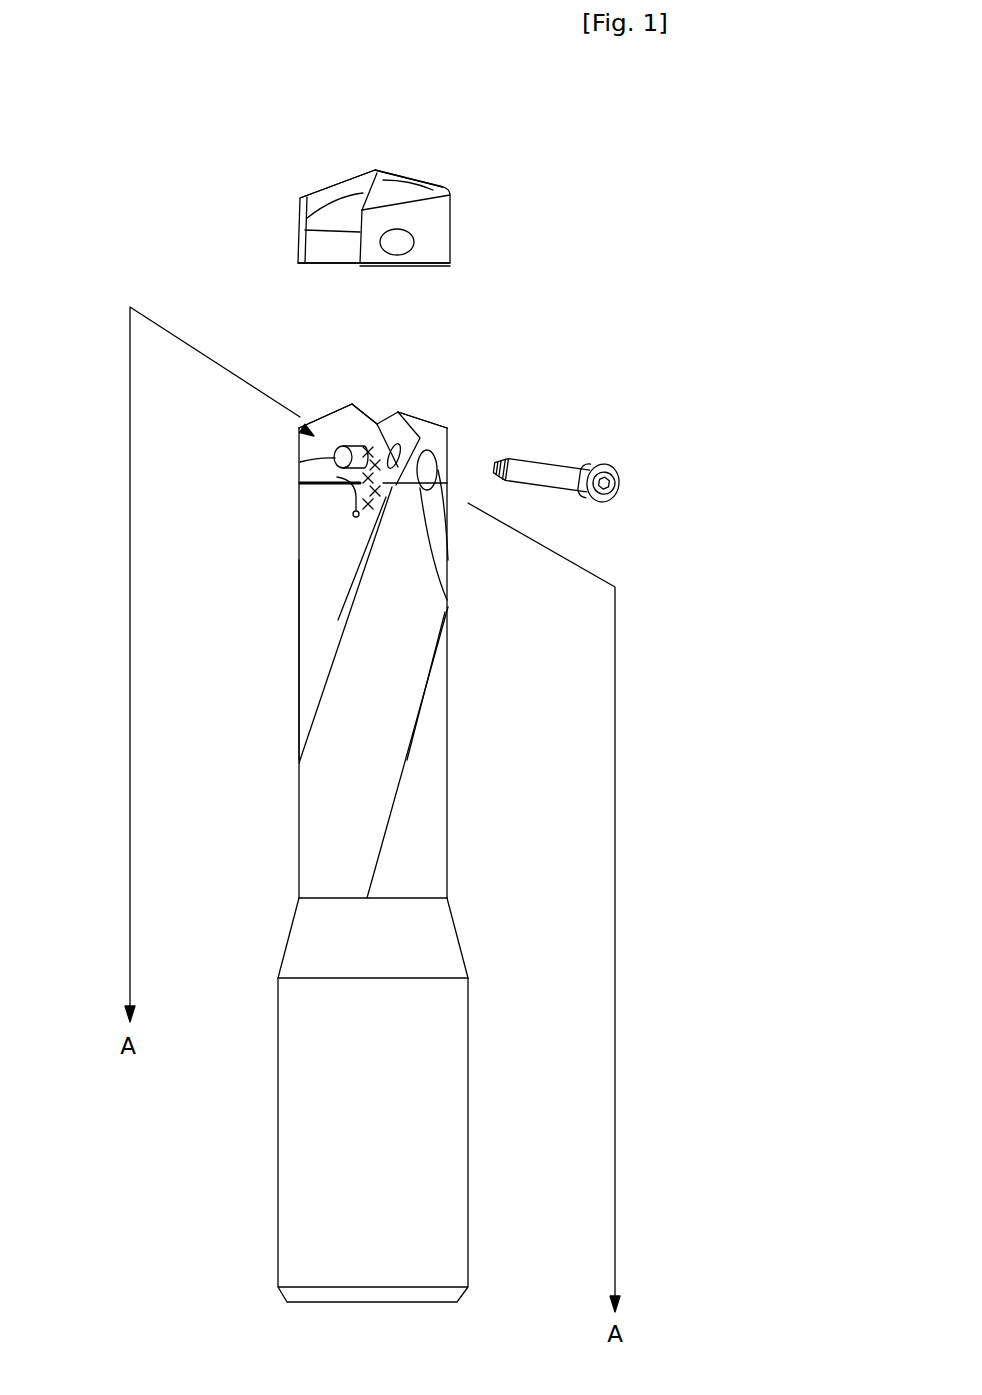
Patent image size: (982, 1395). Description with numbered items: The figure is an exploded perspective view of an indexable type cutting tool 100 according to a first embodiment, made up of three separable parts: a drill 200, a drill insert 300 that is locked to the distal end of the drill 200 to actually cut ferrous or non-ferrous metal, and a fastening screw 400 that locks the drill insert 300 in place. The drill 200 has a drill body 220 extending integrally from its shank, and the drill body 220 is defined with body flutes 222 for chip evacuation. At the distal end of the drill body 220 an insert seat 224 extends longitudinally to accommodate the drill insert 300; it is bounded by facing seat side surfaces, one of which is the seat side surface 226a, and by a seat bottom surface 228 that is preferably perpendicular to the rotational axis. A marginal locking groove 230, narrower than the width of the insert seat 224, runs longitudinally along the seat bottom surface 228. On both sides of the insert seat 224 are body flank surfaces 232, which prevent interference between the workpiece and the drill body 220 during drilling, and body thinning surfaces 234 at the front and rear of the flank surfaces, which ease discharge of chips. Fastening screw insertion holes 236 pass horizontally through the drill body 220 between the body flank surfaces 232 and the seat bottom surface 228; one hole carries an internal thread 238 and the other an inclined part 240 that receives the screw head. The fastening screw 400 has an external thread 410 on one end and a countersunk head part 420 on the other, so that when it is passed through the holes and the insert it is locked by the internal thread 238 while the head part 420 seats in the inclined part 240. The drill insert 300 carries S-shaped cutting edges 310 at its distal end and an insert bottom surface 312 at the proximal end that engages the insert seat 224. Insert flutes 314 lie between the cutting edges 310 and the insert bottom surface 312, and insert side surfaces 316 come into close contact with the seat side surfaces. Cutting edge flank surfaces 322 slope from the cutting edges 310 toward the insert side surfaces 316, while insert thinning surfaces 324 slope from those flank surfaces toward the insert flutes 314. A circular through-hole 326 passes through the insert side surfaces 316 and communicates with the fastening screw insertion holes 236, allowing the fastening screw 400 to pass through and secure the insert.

The indexable type cutting tool 100 is at (359, 108).
The drill 200 is at (280, 600).
The drill body 220 is at (450, 627).
The body flutes 222 is at (307, 569).
The insert seat 224 is at (298, 423).
The seat side surface 226a is at (298, 430).
The seat bottom surface 228 is at (300, 484).
The marginal locking groove 230 is at (355, 514).
The body flank surfaces 232 is at (323, 417).
The body thinning surfaces 234 is at (372, 413).
The fastening screw insertion holes 236 is at (442, 540).
The internal thread 238 is at (338, 452).
The inclined part 240 is at (440, 470).
The drill insert 300 is at (266, 258).
The cutting edges 310 is at (327, 187).
The insert bottom surface 312 is at (370, 267).
The insert flutes 314 is at (328, 238).
The insert side surfaces 316 is at (413, 205).
The cutting edge flank surfaces 322 is at (430, 187).
The insert thinning surfaces 324 is at (362, 193).
The through-hole 326 is at (400, 243).
The fastening screw 400 is at (596, 483).
The external thread 410 is at (498, 490).
The head part 420 is at (613, 470).